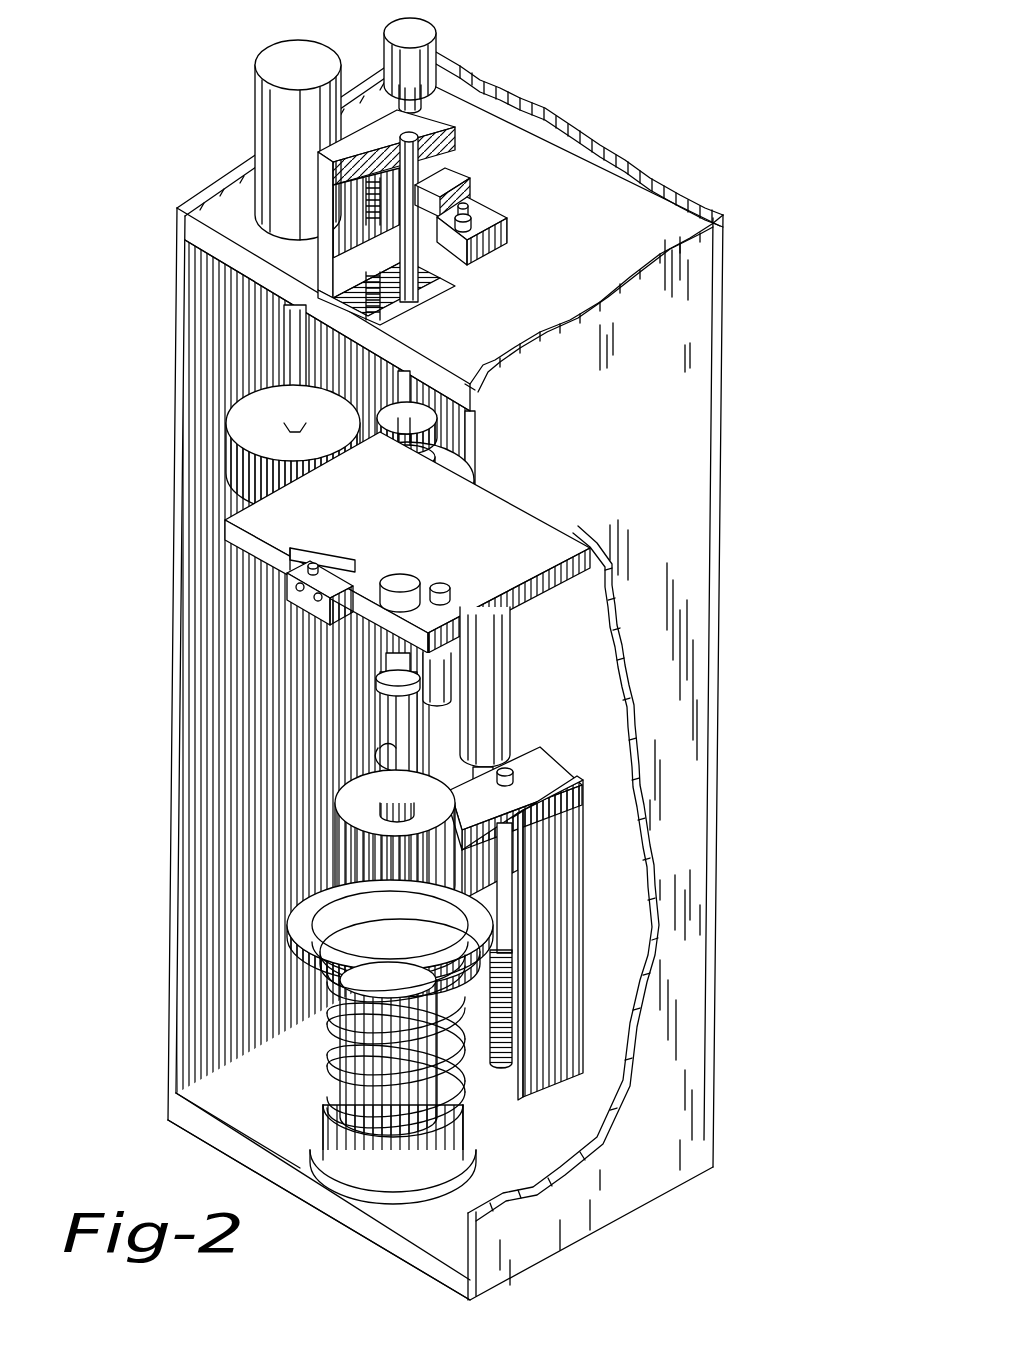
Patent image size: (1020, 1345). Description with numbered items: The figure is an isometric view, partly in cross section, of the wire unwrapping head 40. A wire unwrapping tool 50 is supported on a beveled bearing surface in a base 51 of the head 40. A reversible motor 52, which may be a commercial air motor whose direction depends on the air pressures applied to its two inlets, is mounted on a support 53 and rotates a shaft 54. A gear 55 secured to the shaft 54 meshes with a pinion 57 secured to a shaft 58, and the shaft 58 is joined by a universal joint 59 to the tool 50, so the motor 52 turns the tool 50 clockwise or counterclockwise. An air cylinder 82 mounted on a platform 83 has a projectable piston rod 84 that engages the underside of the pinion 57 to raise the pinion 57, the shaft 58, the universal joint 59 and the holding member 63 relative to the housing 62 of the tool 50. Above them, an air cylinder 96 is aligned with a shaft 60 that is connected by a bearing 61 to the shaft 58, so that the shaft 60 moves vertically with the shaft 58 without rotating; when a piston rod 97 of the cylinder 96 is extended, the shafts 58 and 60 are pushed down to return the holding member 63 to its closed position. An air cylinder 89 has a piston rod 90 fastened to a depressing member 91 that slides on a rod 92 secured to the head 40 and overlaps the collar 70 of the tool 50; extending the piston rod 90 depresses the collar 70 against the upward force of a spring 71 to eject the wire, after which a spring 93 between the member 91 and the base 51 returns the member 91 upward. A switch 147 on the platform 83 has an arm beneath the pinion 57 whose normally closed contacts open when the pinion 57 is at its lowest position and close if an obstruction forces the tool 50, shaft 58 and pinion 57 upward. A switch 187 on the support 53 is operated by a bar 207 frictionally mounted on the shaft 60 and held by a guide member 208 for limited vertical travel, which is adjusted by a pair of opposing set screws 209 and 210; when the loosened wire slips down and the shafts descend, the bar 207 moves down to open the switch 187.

The wire unwrapping head 40 is at (752, 466).
The wire unwrapping tool 50 is at (300, 1047).
The base 51 is at (275, 1140).
The reversible motor 52 is at (262, 71).
The support 53 is at (195, 236).
The shaft 54 is at (288, 424).
The gear 55 is at (226, 474).
The pinion 57 is at (456, 484).
The shaft 58 is at (386, 466).
The universal joint 59 is at (384, 780).
The shaft 60 is at (416, 384).
The bearing 61 is at (428, 424).
The housing 62 is at (352, 1094).
The holding member 63 is at (410, 786).
The collar 70 is at (346, 1038).
The spring 71 is at (450, 1116).
The air cylinder 82 is at (437, 704).
The platform 83 is at (498, 604).
The piston rod 84 is at (440, 583).
The air cylinder 89 is at (506, 728).
The piston rod 90 is at (520, 757).
The depressing member 91 is at (330, 882).
The rod 92 is at (486, 1056).
The spring 93 is at (512, 1082).
The air cylinder 96 is at (432, 47).
The piston rod 97 is at (423, 104).
The switch 147 is at (354, 585).
The switch 187 is at (492, 226).
The bar 207 is at (460, 182).
The guide member 208 is at (450, 272).
The set screw 209 is at (386, 213).
The set screw 210 is at (413, 322).